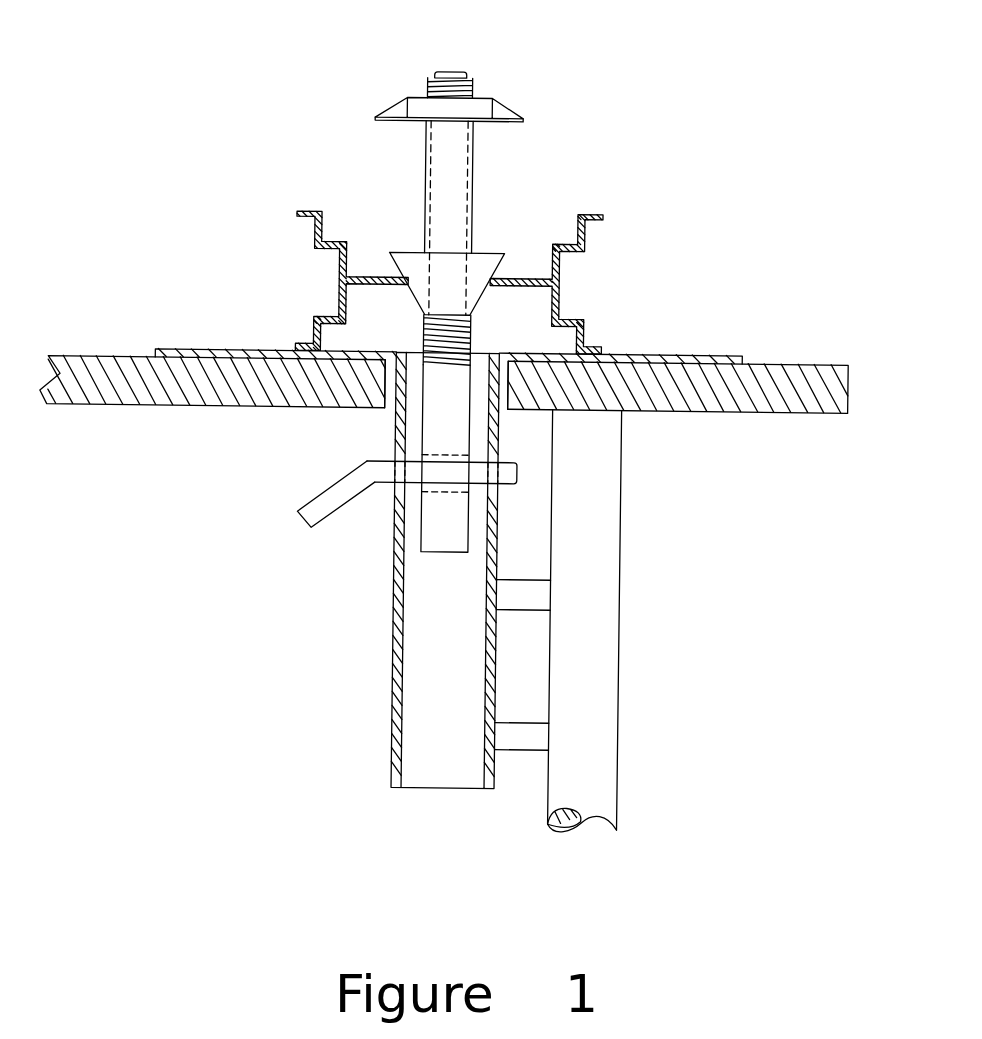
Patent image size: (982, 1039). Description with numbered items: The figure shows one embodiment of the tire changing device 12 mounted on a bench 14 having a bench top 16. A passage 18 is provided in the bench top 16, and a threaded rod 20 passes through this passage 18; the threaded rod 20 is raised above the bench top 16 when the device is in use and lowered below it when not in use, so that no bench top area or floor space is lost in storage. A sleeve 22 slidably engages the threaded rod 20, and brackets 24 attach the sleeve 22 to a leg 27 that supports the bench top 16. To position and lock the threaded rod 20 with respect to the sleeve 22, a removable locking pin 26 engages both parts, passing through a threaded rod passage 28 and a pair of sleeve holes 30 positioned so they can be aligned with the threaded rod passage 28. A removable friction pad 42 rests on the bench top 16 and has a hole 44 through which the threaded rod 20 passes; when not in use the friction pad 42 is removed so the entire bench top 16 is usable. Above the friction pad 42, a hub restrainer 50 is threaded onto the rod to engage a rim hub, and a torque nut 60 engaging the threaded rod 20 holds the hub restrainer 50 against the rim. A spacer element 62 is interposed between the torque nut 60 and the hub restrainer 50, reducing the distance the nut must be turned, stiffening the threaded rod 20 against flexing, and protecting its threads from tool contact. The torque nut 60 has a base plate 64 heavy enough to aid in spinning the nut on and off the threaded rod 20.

The tire changing device 12 is at (797, 166).
The bench 14 is at (682, 487).
The bench top 16 is at (61, 361).
The passage 18 is at (376, 438).
The threaded rod 20 is at (464, 78).
The sleeve 22 is at (396, 654).
The brackets 24 is at (523, 610).
The locking pin 26 is at (298, 514).
The leg 27 is at (619, 688).
The threaded rod passage 28 is at (452, 493).
The sleeve holes 30 is at (372, 458).
The friction pad 42 is at (703, 352).
The hole 44 is at (501, 340).
The hub restrainer 50 is at (486, 253).
The torque nut 60 is at (552, 101).
The spacer element 62 is at (466, 198).
The base plate 64 is at (395, 123).